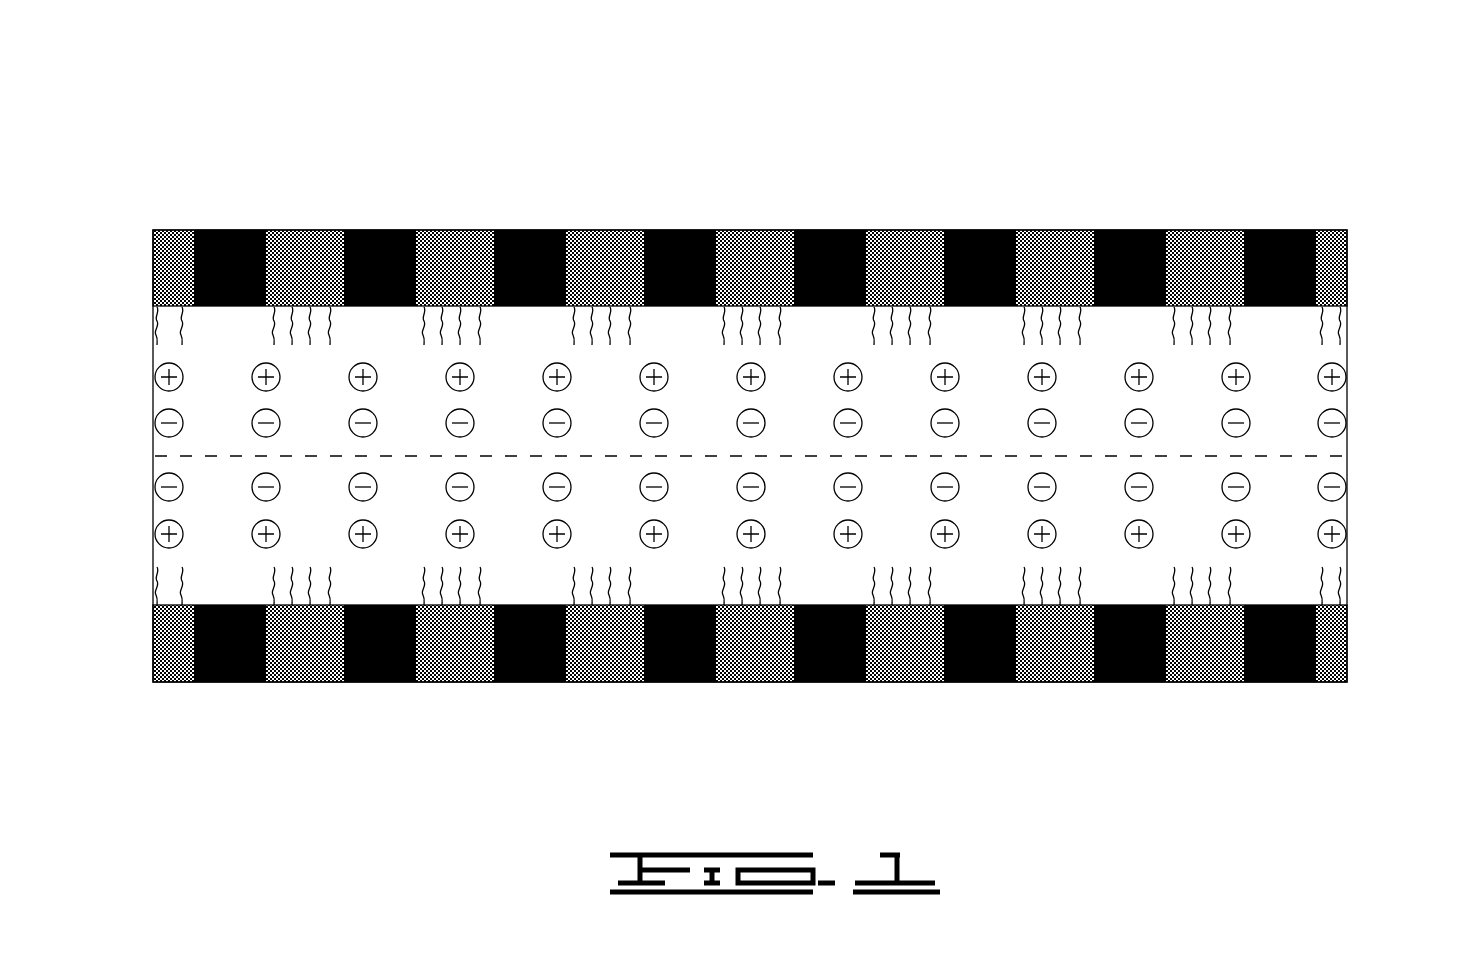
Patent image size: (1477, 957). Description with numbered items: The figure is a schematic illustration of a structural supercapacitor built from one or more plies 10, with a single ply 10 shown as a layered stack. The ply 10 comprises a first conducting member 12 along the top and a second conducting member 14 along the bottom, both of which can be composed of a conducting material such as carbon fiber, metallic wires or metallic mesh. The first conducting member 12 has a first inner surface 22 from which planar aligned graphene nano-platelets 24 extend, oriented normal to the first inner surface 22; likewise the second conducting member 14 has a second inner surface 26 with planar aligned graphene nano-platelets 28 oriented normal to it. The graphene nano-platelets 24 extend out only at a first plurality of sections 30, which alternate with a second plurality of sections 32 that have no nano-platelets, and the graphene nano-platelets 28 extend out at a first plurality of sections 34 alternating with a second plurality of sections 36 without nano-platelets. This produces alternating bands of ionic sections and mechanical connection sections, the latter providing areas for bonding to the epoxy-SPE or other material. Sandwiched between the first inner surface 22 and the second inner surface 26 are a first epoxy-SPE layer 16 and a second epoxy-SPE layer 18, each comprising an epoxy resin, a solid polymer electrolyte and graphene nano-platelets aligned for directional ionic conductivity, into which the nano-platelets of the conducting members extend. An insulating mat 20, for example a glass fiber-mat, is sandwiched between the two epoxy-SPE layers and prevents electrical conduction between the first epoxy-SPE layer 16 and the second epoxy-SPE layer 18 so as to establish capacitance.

The ply 10 is at (1258, 88).
The first conducting member 12 is at (1213, 230).
The second conducting member 14 is at (1220, 683).
The first epoxy-SPE layer 16 is at (1350, 348).
The second epoxy-SPE layer 18 is at (1350, 560).
The insulating mat 20 is at (1320, 456).
The first inner surface 22 is at (218, 308).
The planar aligned graphene nano-platelets 24 is at (337, 325).
The second inner surface 26 is at (222, 605).
The planar aligned graphene nano-platelets 28 is at (327, 585).
The first plurality of sections 30 is at (292, 230).
The second plurality of sections 32 is at (205, 230).
The first plurality of sections 34 is at (367, 683).
The second plurality of sections 36 is at (285, 683).